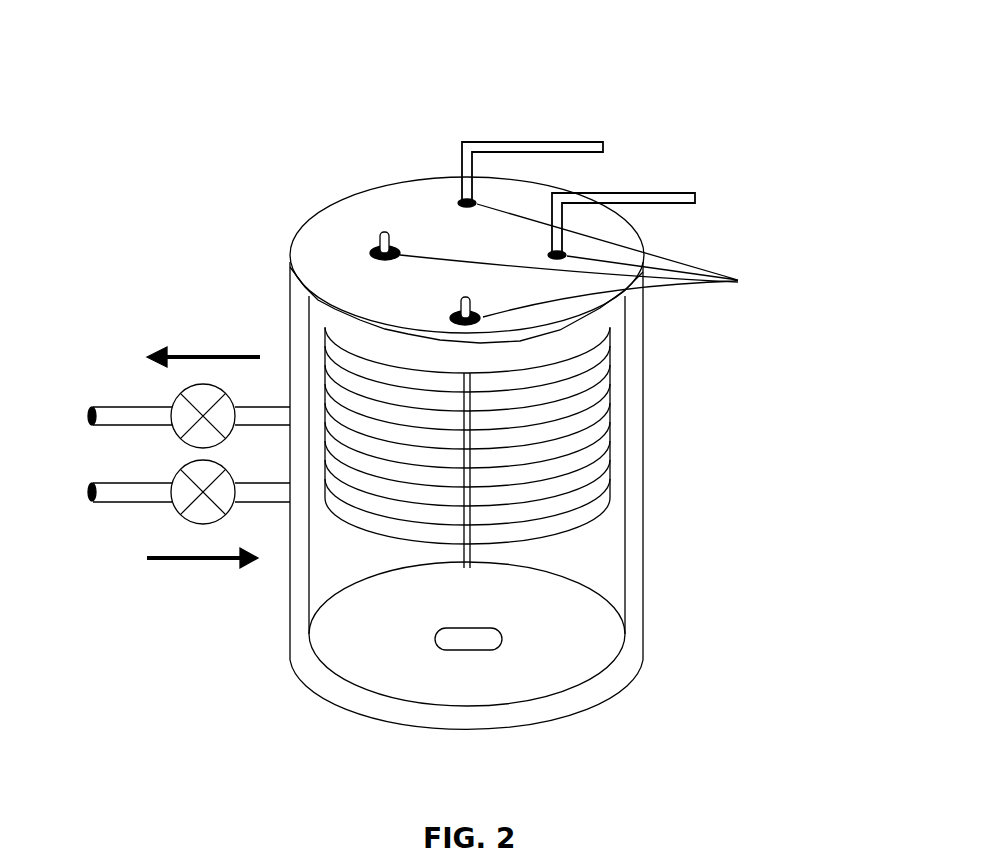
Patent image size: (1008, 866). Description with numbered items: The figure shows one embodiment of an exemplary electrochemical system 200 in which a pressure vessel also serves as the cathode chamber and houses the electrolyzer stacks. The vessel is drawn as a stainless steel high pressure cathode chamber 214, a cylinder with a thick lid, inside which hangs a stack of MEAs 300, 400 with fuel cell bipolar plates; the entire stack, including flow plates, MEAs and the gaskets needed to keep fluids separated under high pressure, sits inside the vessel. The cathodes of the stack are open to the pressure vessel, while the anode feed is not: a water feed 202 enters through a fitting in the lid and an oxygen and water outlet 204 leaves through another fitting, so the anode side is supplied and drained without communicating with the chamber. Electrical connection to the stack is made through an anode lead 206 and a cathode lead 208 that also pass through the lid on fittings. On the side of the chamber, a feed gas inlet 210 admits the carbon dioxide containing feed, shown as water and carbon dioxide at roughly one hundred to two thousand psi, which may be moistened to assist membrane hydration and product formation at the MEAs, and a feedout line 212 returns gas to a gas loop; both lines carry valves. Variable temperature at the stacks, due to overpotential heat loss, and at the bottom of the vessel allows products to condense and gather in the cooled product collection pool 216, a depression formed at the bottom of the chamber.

The electrolysis system 200 is at (482, 33).
The water feed 202 is at (768, 145).
The O2/water outlet 204 is at (675, 81).
The anode lead 206 is at (384, 232).
The cathode lead 208 is at (457, 316).
The feed gas inlet valve 210 is at (124, 483).
The feedout to gas loop valve 212 is at (127, 407).
The stainless steel high pressure cathode chamber 214 is at (805, 497).
The cooled product collection pool 216 is at (768, 672).
The MEA stack with fuel cell bipolar plates 300 is at (587, 447).
The MEA stack with fuel cell bipolar plates 400 is at (827, 369).